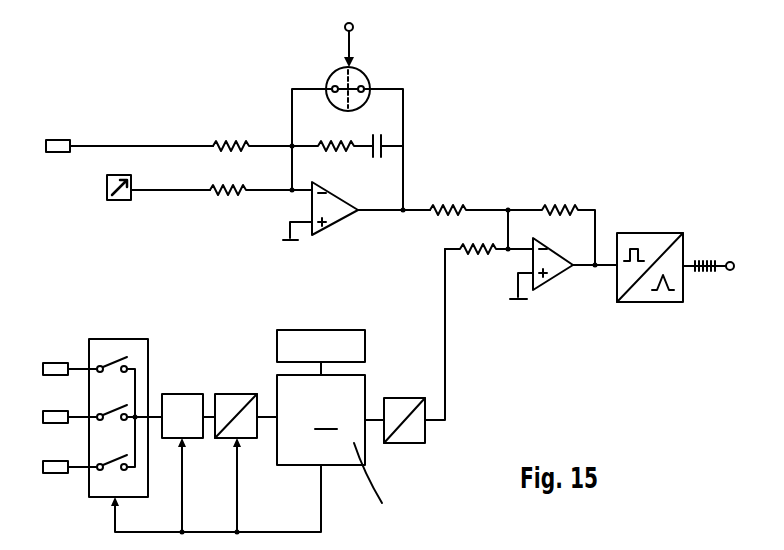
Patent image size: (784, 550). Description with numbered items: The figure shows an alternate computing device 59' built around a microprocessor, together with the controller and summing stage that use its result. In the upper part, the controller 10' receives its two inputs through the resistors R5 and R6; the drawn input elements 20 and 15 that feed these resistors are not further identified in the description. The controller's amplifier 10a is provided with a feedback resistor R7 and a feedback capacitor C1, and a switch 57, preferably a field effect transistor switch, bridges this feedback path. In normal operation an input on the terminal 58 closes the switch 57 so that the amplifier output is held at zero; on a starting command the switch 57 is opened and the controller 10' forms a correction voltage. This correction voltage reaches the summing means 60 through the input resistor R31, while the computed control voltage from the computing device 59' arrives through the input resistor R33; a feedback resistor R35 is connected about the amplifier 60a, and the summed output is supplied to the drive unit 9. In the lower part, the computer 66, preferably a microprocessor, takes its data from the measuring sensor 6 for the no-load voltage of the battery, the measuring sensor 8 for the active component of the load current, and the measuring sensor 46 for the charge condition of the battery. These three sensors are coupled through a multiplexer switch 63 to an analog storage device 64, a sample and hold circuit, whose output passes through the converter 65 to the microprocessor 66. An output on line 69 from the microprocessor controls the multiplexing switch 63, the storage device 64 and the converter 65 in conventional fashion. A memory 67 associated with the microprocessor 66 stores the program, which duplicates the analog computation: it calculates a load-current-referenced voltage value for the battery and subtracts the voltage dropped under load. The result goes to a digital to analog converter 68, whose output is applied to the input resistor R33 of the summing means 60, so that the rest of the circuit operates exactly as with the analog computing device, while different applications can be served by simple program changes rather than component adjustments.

The input element 20 is at (58, 140).
The sensor 15 is at (128, 200).
The resistor R5 is at (220, 139).
The resistor R6 is at (217, 189).
The feedback resistor R7 is at (324, 141).
The feedback capacitor C1 is at (385, 140).
The switch 57 is at (367, 74).
The input terminal 58 is at (352, 25).
The controller 10' is at (360, 151).
The operational amplifier 10a is at (339, 213).
The input resistor R31 is at (463, 205).
The feedback resistor R35 is at (573, 205).
The input resistor R33 is at (490, 256).
The summing means 60 is at (585, 251).
The amplifier 60a is at (557, 277).
The drive unit 9 is at (660, 233).
The multiplexer switch 63 is at (108, 339).
The measuring sensor 6 is at (65, 363).
The measuring sensor 8 is at (67, 411).
The measuring sensor 46 is at (68, 461).
The analog storage device 64 is at (170, 394).
The analog-to-digital converter 65 is at (217, 394).
The memory 67 is at (318, 330).
The computer 66 is at (395, 457).
The alternate computing device 59' is at (421, 334).
The digital to analog converter 68 is at (407, 443).
The line 69 is at (321, 493).